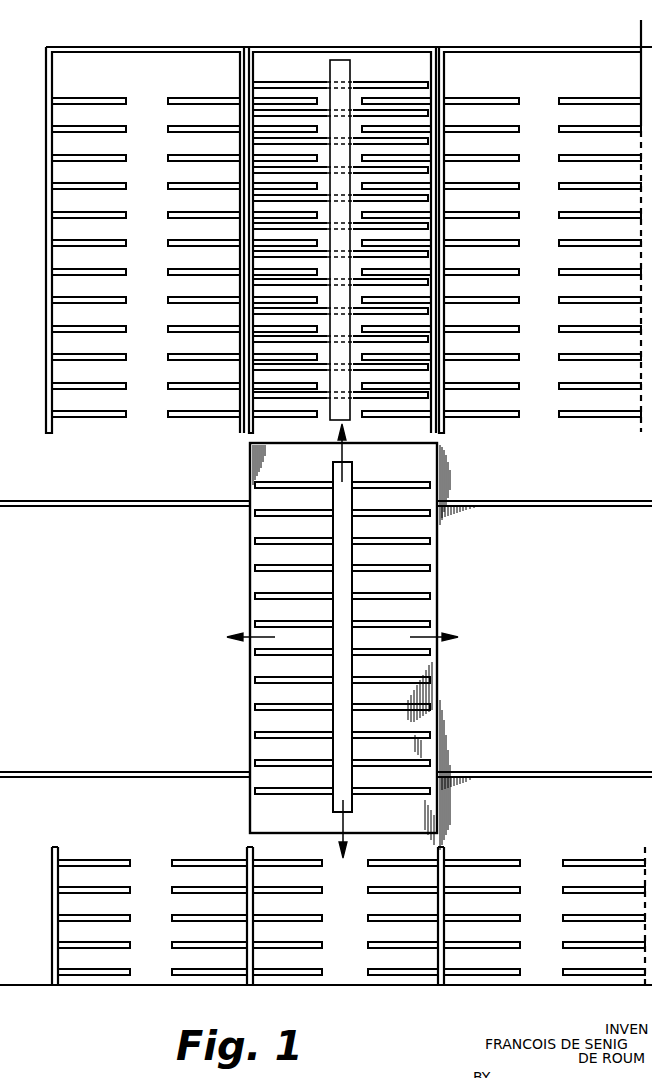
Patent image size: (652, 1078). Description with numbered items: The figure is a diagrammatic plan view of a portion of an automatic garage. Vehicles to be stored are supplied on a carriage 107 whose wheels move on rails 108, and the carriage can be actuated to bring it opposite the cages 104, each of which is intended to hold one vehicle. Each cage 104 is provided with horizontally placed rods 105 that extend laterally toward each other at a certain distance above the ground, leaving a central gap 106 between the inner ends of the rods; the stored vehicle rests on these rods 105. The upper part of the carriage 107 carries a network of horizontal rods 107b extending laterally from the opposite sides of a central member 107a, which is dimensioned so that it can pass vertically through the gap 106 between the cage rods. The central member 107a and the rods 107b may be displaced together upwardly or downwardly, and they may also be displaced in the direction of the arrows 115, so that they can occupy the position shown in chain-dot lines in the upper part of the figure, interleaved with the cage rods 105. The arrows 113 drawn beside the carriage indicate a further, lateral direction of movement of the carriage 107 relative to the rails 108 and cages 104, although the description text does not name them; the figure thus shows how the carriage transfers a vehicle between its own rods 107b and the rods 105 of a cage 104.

The cage 104 is at (176, 56).
The rods 105 is at (168, 130).
The central gap 106 is at (160, 241).
The carriage 107 is at (393, 673).
The central member 107a is at (352, 470).
The horizontal rods 107b is at (262, 595).
The rails 108 is at (506, 500).
The lateral displacement direction 113 is at (345, 633).
The arrows 115 is at (350, 421).